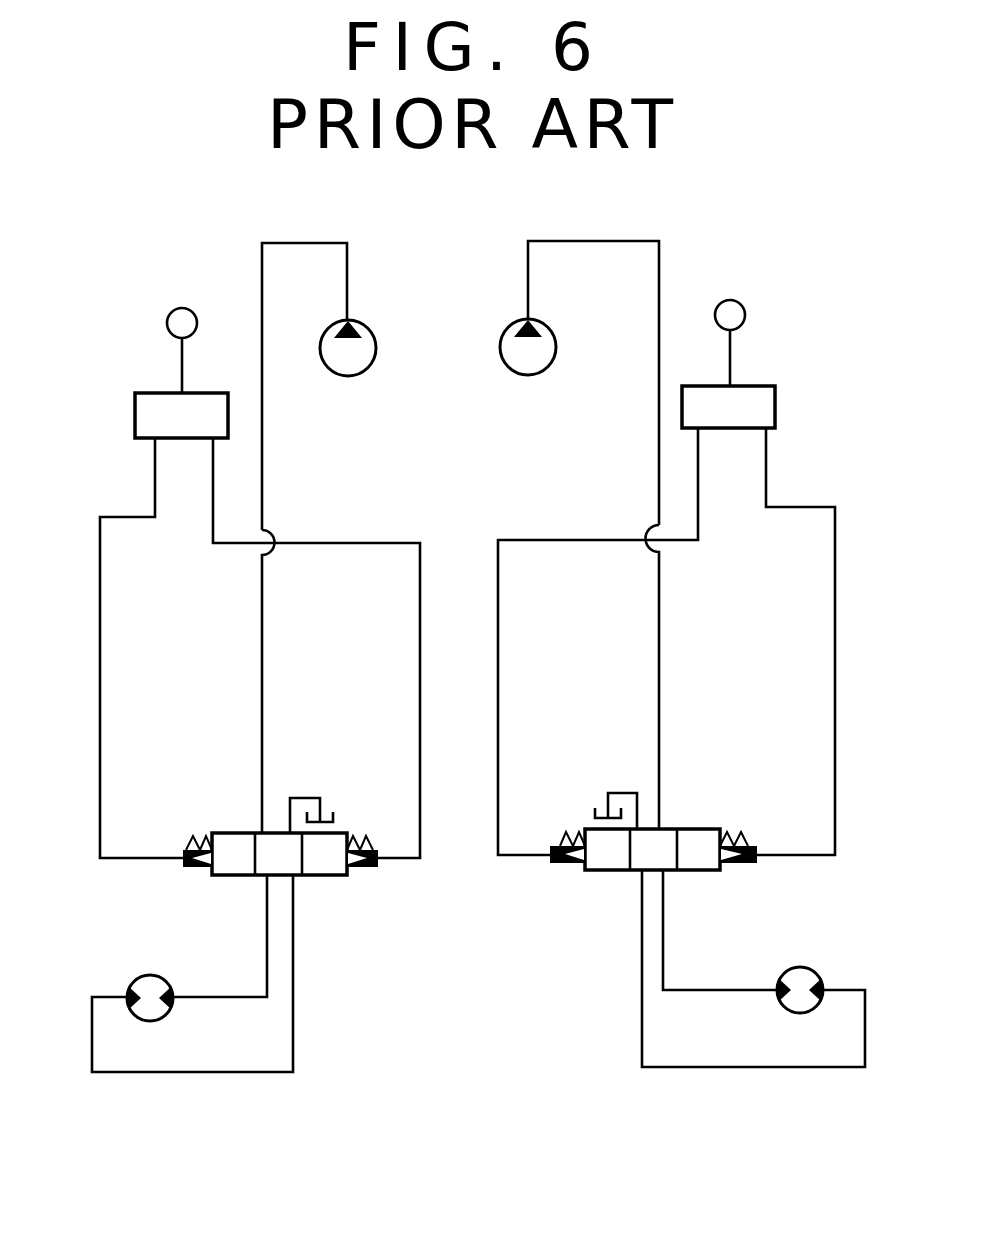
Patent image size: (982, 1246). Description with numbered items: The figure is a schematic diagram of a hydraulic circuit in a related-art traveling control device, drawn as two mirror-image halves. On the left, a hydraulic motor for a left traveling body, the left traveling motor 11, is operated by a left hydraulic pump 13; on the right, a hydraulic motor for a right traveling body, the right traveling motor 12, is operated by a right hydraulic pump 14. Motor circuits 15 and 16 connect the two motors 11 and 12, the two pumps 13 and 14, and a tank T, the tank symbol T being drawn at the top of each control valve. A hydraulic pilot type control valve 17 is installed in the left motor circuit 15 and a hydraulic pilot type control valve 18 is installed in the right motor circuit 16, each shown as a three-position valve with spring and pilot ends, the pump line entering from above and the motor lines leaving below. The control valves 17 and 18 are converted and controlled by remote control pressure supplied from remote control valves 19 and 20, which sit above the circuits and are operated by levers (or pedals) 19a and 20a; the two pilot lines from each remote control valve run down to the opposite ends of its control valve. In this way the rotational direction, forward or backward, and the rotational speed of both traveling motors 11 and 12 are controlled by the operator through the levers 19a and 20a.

The left traveling motor 11 is at (143, 973).
The right traveling motor 12 is at (815, 968).
The left hydraulic pump 13 is at (355, 377).
The right hydraulic pump 14 is at (536, 375).
The motor circuit 15 is at (306, 992).
The motor circuit 16 is at (633, 987).
The hydraulic pilot type control valve 17 is at (232, 833).
The hydraulic pilot type control valve 18 is at (710, 828).
The remote control valve 19 is at (135, 418).
The lever 19a is at (182, 358).
The remote control valve 20 is at (775, 405).
The lever 20a is at (730, 350).
The tank T is at (332, 820).